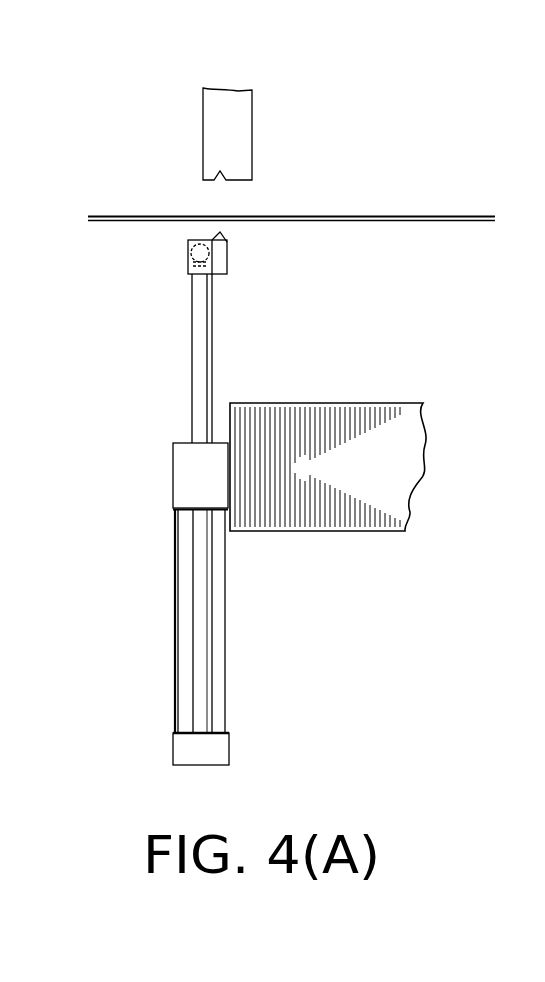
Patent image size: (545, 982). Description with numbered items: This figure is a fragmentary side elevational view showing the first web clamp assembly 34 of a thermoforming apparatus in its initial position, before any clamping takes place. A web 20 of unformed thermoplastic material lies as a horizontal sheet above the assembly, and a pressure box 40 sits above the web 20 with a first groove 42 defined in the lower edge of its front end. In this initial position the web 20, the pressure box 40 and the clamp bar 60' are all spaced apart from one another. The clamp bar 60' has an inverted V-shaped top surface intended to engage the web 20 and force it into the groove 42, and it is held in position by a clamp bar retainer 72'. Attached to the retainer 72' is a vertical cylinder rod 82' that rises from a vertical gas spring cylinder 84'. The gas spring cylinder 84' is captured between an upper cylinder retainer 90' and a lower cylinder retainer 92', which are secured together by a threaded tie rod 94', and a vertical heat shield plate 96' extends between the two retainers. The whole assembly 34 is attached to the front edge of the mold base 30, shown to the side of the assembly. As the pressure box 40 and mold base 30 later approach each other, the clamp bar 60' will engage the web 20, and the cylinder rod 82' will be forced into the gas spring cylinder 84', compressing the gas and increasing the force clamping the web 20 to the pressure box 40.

The web 20 is at (340, 217).
The mold base 30 is at (400, 467).
The first web clamp assembly 34 is at (334, 627).
The pressure box 40 is at (240, 137).
The first groove 42 is at (220, 184).
The clamp bar 60' is at (249, 257).
The second clamp bar retainer 72' is at (163, 273).
The cylinder rod 82' is at (242, 358).
The gas spring cylinder 84' is at (239, 621).
The upper cylinder retainer 90' is at (170, 481).
The lower cylinder retainer 92' is at (236, 756).
The threaded tie rod 94' is at (252, 621).
The vertical heat shield plate 96' is at (147, 621).